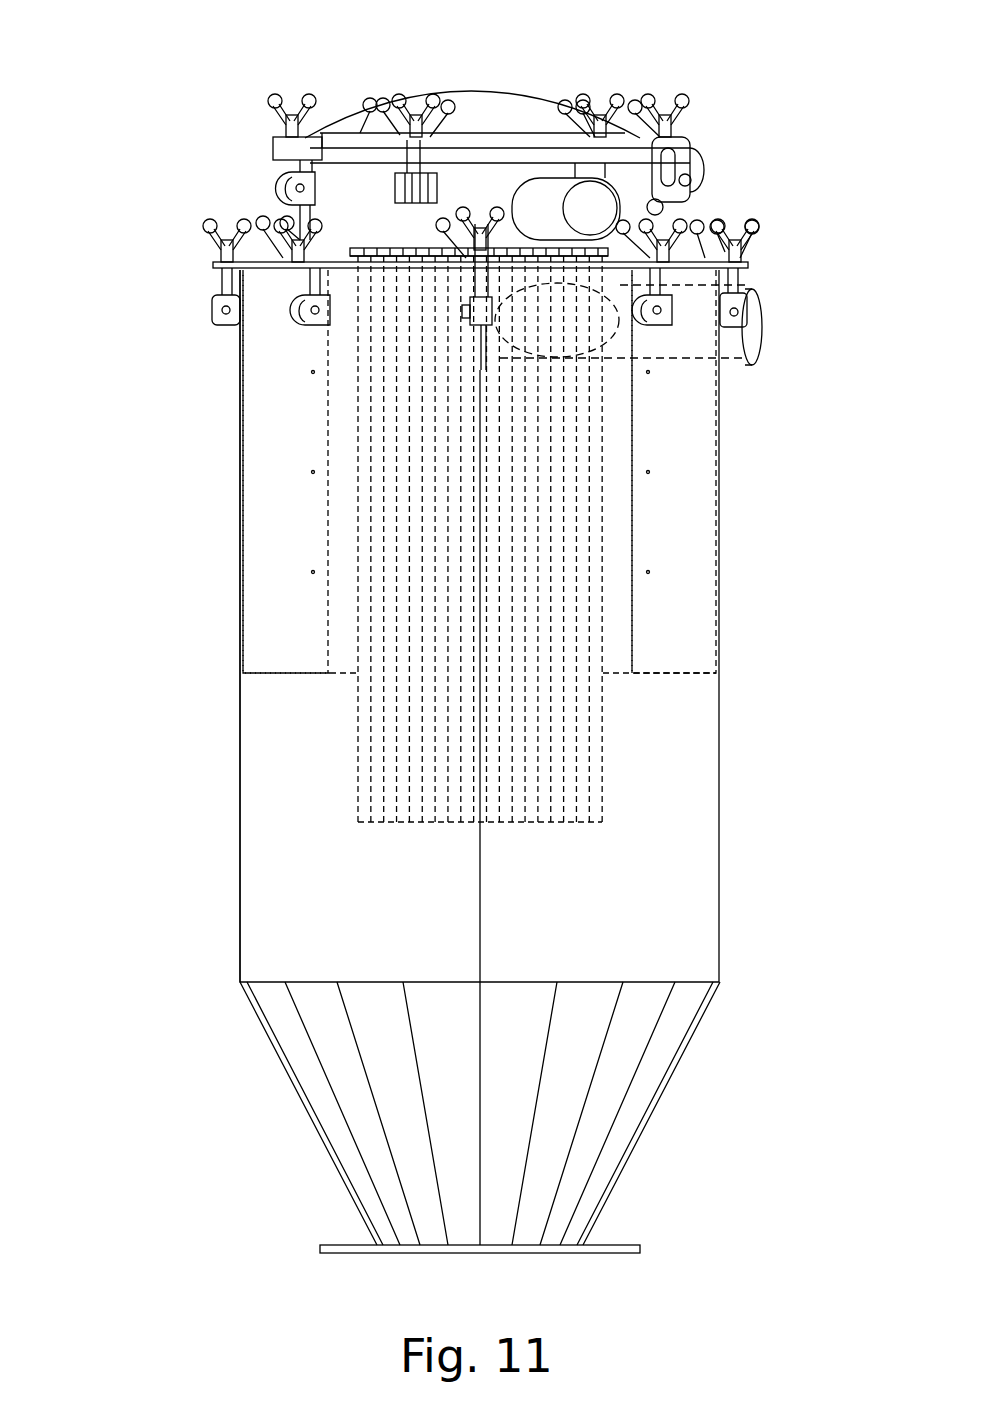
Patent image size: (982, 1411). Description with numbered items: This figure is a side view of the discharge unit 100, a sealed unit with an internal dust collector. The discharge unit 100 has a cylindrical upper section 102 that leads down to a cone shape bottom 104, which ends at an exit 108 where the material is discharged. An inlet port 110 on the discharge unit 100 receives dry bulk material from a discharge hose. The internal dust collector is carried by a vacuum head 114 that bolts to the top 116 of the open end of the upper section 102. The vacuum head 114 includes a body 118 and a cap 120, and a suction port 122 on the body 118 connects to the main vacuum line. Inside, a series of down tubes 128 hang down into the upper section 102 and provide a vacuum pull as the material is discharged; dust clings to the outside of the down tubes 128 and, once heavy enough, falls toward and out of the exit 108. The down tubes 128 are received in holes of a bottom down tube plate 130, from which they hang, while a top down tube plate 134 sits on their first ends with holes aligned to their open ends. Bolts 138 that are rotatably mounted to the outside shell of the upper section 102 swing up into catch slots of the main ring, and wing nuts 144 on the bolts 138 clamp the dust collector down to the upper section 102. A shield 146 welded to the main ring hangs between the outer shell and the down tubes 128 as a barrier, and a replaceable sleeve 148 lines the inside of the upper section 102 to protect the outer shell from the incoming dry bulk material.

The discharge unit 100 is at (106, 1143).
The upper section 102 is at (718, 780).
The cone shape bottom 104 is at (667, 1082).
The exit 108 is at (549, 1253).
The inlet port 110 is at (765, 346).
The vacuum head 114 is at (748, 187).
The top 116 is at (225, 271).
The body 118 is at (343, 178).
The cap 120 is at (484, 92).
The suction port 122 is at (603, 208).
The down tubes 128 is at (360, 820).
The bottom down tube plate 130 is at (326, 255).
The top down tube plate 134 is at (367, 248).
The bolts 138 is at (740, 276).
The wing nuts 144 is at (210, 246).
The shield 146 is at (622, 665).
The sleeve 148 is at (270, 678).